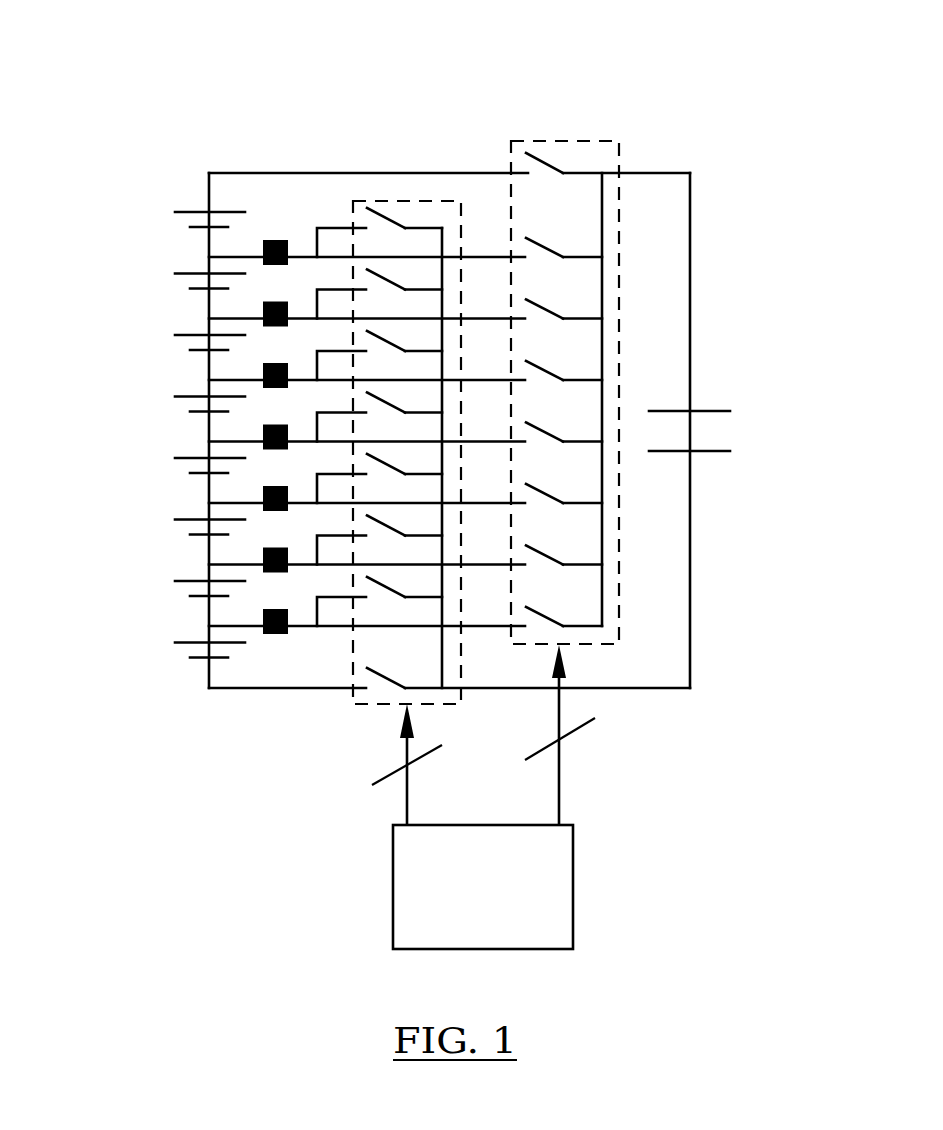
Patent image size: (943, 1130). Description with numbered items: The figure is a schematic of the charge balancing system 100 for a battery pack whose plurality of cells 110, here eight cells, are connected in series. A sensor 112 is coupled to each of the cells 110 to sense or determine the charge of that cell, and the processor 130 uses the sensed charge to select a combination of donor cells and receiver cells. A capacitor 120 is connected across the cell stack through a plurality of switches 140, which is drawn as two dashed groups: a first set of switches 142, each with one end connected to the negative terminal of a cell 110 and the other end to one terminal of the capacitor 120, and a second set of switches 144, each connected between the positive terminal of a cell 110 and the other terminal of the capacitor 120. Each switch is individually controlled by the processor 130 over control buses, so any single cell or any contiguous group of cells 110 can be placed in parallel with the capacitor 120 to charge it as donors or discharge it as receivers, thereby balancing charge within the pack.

The charge balancing system 100 is at (146, 72).
The plurality of cells 110 is at (175, 157).
The sensor 112 is at (276, 240).
The capacitor 120 is at (722, 483).
The processor 130 is at (502, 903).
The plurality of switches 140 is at (508, 409).
The first set of switches 142 is at (374, 704).
The second set of switches 144 is at (607, 645).